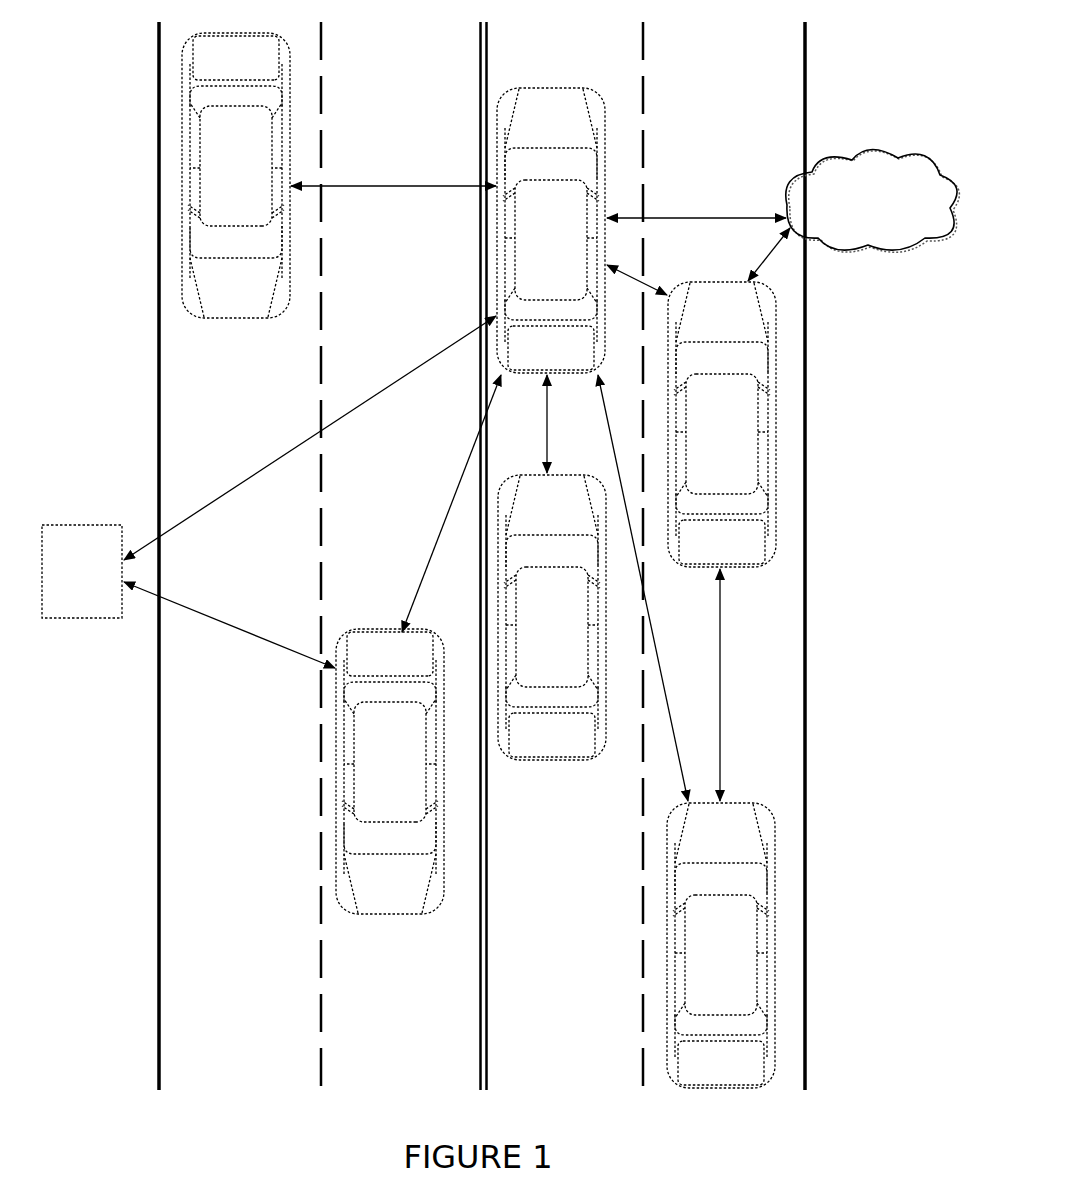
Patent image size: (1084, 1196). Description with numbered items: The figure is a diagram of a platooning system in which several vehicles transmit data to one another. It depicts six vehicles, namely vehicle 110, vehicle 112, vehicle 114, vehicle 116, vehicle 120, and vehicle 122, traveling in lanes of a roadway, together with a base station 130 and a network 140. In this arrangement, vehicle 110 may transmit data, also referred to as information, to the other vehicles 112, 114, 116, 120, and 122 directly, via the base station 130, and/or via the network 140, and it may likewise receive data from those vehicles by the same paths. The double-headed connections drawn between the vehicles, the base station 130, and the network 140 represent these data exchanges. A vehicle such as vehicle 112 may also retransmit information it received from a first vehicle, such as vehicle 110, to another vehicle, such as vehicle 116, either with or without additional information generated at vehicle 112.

The vehicle 110 is at (607, 180).
The vehicle 112 is at (776, 384).
The vehicle 114 is at (545, 758).
The vehicle 116 is at (776, 892).
The vehicle 120 is at (185, 158).
The vehicle 122 is at (337, 753).
The base station 130 is at (82, 571).
The network 140 is at (873, 200).